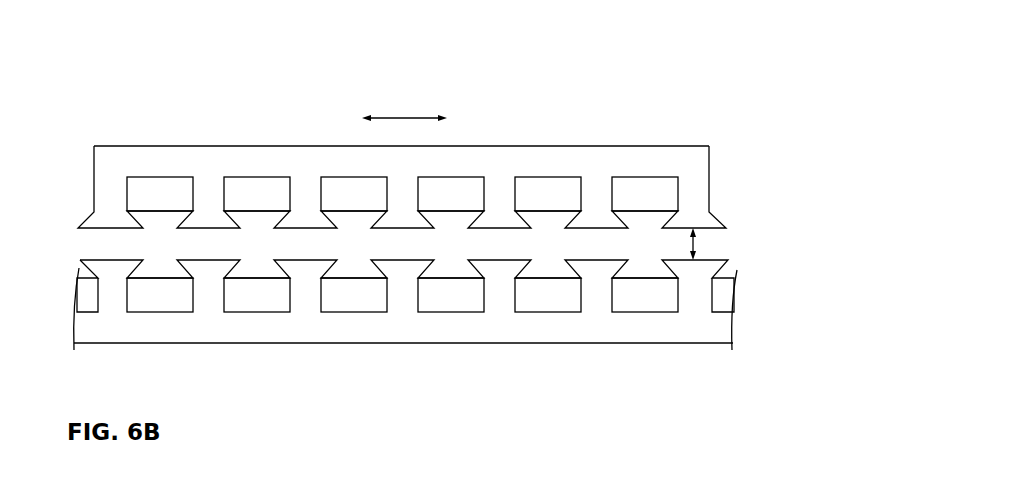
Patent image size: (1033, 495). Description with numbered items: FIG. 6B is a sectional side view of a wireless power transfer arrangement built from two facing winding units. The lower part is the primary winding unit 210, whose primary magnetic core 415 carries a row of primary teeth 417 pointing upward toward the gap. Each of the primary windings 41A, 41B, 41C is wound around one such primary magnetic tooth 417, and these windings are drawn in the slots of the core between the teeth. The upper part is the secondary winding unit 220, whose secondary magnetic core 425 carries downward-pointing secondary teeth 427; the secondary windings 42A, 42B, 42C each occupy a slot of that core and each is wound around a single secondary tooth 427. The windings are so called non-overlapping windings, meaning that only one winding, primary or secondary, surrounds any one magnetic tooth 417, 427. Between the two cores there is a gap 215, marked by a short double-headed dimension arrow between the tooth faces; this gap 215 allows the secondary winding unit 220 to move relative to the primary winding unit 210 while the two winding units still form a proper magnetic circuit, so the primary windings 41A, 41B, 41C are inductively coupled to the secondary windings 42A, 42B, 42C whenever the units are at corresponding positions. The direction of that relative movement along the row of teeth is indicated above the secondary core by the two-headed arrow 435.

The secondary winding unit 220 is at (364, 152).
The secondary teeth 427 is at (71, 217).
The secondary magnetic core 425 is at (478, 158).
The secondary winding 42A is at (138, 205).
The secondary winding 42B is at (332, 205).
The secondary winding 42C is at (526, 205).
The primary winding unit 210 is at (370, 332).
The primary teeth 417 is at (71, 257).
The primary magnetic core 415 is at (422, 334).
The primary winding 41A is at (138, 305).
The primary winding 41B is at (332, 305).
The primary winding 41C is at (526, 305).
The two-headed arrow 435 is at (407, 115).
The gap 215 is at (697, 246).